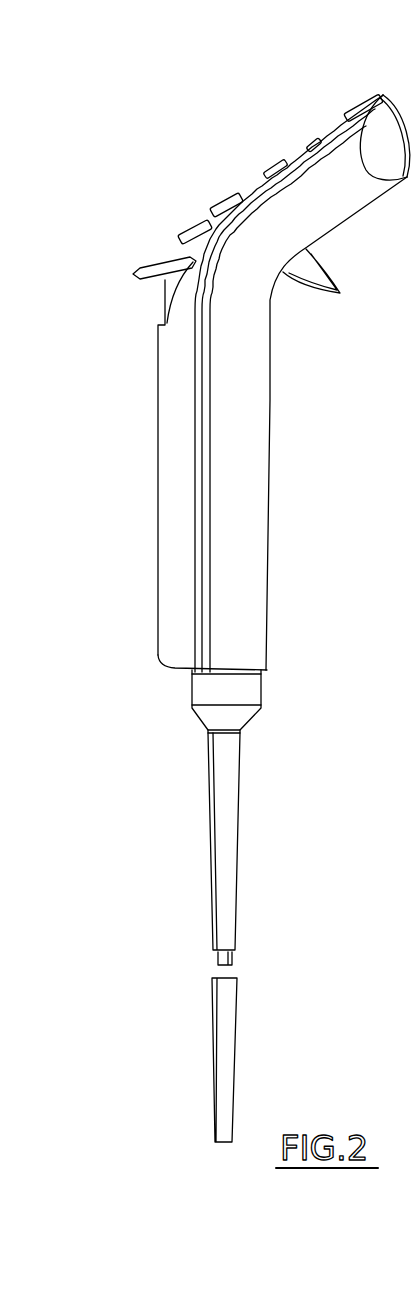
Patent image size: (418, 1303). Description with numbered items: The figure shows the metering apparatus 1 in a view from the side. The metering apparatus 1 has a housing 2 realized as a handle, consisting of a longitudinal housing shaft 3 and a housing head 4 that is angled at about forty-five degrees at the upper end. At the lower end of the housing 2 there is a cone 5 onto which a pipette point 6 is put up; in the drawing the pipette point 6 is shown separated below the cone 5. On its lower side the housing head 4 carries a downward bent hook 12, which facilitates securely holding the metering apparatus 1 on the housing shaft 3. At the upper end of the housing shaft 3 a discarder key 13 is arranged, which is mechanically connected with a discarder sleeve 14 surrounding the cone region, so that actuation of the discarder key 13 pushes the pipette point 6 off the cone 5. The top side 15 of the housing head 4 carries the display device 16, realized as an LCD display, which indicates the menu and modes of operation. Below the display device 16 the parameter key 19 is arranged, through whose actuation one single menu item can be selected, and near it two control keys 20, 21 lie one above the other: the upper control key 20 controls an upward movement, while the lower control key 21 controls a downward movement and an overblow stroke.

The metering apparatus 1 is at (130, 446).
The housing 2 is at (172, 397).
The housing shaft 3 is at (258, 493).
The housing head 4 is at (353, 193).
The cone 5 is at (217, 953).
The pipette point 6 is at (223, 1013).
The hook 12 is at (357, 107).
The discarder key 13 is at (153, 262).
The discarder sleeve 14 is at (225, 785).
The top side 15 is at (296, 144).
The display device 16 is at (283, 167).
The parameter key 19 is at (232, 205).
The upper control key 20 is at (220, 217).
The lower control key 21 is at (183, 228).